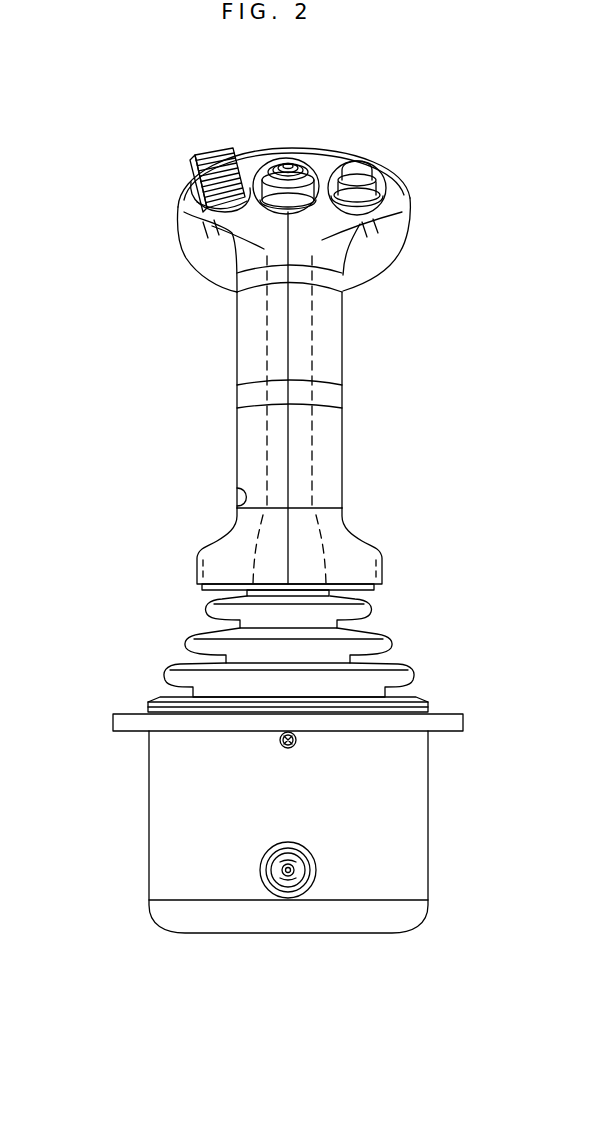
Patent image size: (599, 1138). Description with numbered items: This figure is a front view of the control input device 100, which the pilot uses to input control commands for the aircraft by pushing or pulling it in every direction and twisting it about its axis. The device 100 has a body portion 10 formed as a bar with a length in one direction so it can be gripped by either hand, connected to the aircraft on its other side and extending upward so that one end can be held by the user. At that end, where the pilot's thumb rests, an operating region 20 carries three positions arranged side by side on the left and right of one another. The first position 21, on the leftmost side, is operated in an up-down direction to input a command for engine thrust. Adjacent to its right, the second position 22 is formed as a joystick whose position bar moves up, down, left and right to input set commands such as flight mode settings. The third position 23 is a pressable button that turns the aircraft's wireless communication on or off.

The control input device 100 is at (136, 144).
The body portion 10 is at (328, 359).
The operation unit 20 is at (359, 97).
The first position 21 is at (205, 157).
The second position 22 is at (287, 156).
The third position 23 is at (357, 158).